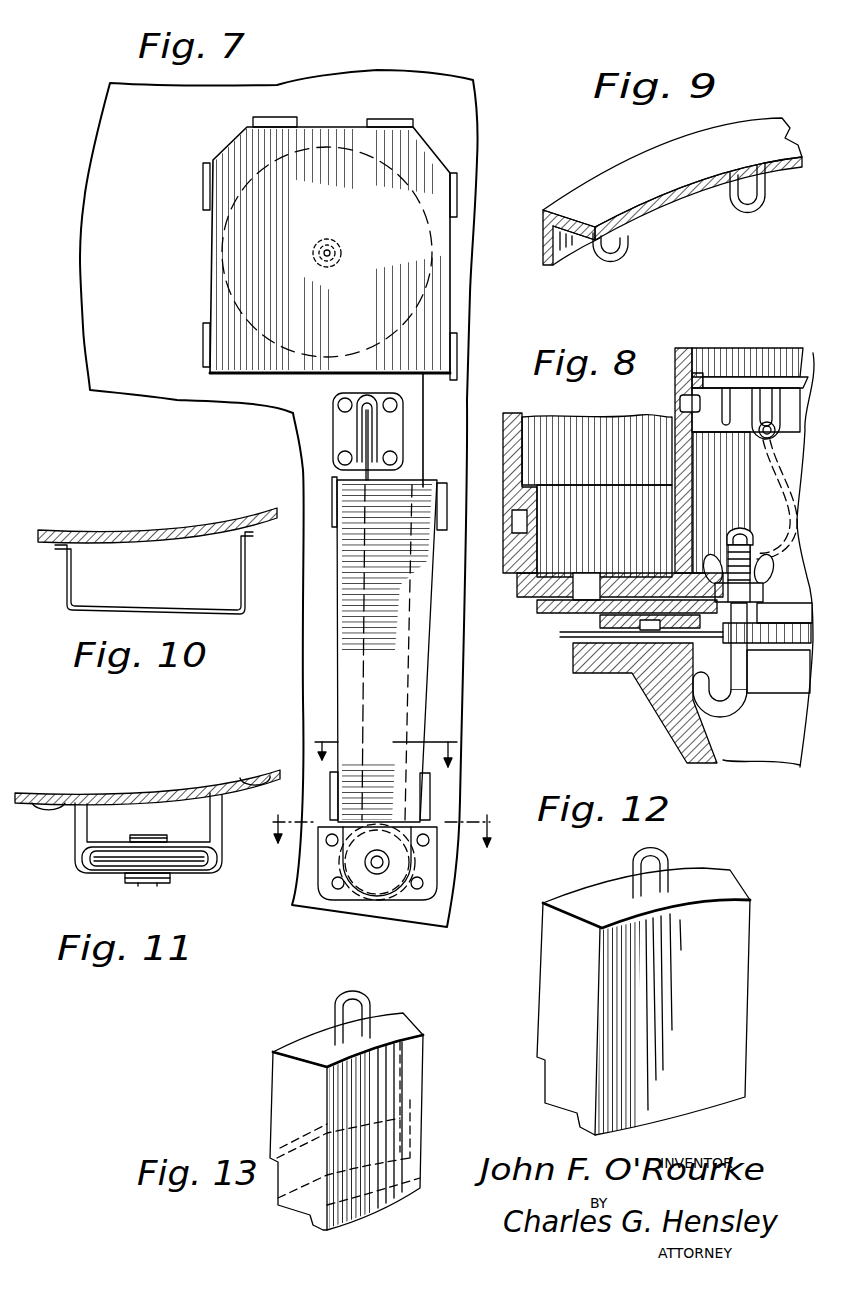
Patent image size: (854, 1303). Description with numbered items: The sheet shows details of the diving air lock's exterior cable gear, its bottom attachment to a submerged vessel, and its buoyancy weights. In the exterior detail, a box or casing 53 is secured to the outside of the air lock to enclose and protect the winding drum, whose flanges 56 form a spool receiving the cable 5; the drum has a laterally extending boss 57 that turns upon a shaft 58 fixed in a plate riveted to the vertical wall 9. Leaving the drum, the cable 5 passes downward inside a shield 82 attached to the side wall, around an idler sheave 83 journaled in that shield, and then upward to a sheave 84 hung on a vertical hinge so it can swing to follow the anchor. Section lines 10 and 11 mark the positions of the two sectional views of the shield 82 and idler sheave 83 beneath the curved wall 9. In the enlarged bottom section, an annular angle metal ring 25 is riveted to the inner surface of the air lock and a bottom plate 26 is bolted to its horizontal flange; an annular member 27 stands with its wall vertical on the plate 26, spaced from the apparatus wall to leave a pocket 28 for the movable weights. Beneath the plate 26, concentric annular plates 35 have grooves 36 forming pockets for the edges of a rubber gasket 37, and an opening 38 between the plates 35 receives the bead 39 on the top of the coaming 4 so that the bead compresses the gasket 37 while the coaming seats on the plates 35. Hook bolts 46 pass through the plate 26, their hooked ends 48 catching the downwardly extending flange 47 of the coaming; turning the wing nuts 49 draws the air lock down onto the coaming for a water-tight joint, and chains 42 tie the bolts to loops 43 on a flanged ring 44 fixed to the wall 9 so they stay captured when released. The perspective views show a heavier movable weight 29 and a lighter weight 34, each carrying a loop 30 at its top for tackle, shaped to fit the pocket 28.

In FIG. 8, the coaming 4 is at (737, 764).
In FIG. 7, the cable 5 is at (431, 446).
In FIG. 8, the vertical wall 9 is at (510, 413).
In FIG. 10, the vertical wall 9 is at (192, 524).
In FIG. 7, the section line 10— 10 is at (381, 843).
In FIG. 7, the section line 11— 11 is at (382, 742).
In FIG. 8, the angle metal ring 25 is at (518, 583).
In FIG. 8, the bottom plate 26 is at (545, 610).
In FIG. 8, the annular member 27 is at (673, 462).
In FIG. 8, the pocket 28 is at (636, 430).
In FIG. 12, the movable weights 29 is at (643, 1001).
In FIG. 12, the loops 30 is at (672, 862).
In FIG. 13, the loops 30 is at (333, 1005).
In FIG. 13, the smaller weights 34 is at (315, 1107).
In FIG. 8, the annular plates 35 is at (793, 632).
In FIG. 8, the grooves 36 is at (592, 634).
In FIG. 8, the gasket 37 is at (665, 638).
In FIG. 8, the opening 38 is at (630, 634).
In FIG. 8, the bead 39 is at (642, 636).
In FIG. 8, the chains 42 is at (792, 494).
In FIG. 9, the loops 43 is at (732, 207).
In FIG. 8, the loops 43 is at (778, 413).
In FIG. 9, the flanged ring 44 is at (672, 191).
In FIG. 8, the flanged ring 44 is at (783, 376).
In FIG. 8, the bolts 46 is at (748, 680).
In FIG. 8, the flange 47 is at (721, 692).
In FIG. 8, the hooked end 48 is at (742, 710).
In FIG. 8, the wing nuts 49 is at (770, 563).
In FIG. 7, the box or casing 53 is at (330, 248).
In FIG. 7, the flanges 56 is at (421, 192).
In FIG. 7, the boss 57 is at (343, 259).
In FIG. 7, the shaft 58 is at (332, 249).
In FIG. 7, the shield 82 is at (388, 649).
In FIG. 10, the shield 82 is at (210, 608).
In FIG. 11, the shield 82 is at (222, 822).
In FIG. 7, the idler sheave 83 is at (400, 875).
In FIG. 11, the idler sheave 83 is at (205, 858).
In FIG. 7, the sheave 84 is at (362, 434).